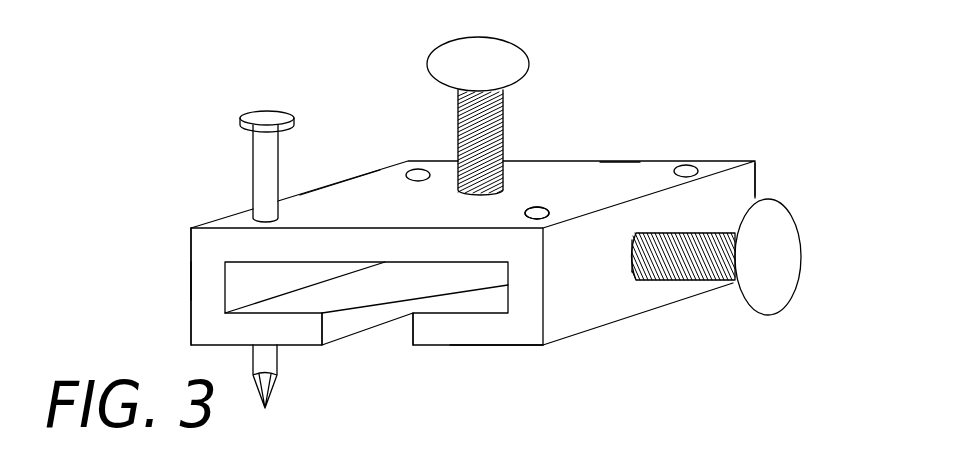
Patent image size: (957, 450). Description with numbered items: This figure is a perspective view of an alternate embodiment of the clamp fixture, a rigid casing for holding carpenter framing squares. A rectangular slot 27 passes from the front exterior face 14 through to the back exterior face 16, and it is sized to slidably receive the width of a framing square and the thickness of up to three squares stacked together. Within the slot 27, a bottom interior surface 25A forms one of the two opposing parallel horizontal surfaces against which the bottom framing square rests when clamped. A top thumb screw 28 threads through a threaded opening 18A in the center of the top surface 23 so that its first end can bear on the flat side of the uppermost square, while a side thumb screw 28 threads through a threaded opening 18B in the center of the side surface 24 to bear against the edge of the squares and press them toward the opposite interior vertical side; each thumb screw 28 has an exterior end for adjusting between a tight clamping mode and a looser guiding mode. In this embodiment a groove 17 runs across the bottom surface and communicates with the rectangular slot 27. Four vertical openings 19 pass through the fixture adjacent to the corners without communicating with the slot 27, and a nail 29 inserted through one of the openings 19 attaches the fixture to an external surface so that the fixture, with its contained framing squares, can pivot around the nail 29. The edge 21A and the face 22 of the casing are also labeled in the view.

The front exterior face 14 is at (205, 308).
The back exterior face 16 is at (652, 161).
The gap in lower lip 17 is at (388, 350).
The threaded opening 18A is at (493, 203).
The threaded opening 18B is at (630, 257).
The vertical openings 19 is at (247, 222).
The front edge of block 21A is at (188, 229).
The front face 22 is at (192, 272).
The top surface 23 is at (370, 188).
The side surface 24 is at (743, 188).
The bottom interior surface 25A is at (501, 347).
The rectangular slot 27 is at (474, 301).
The thumb screw 28 is at (503, 150).
The nail 29 is at (267, 110).